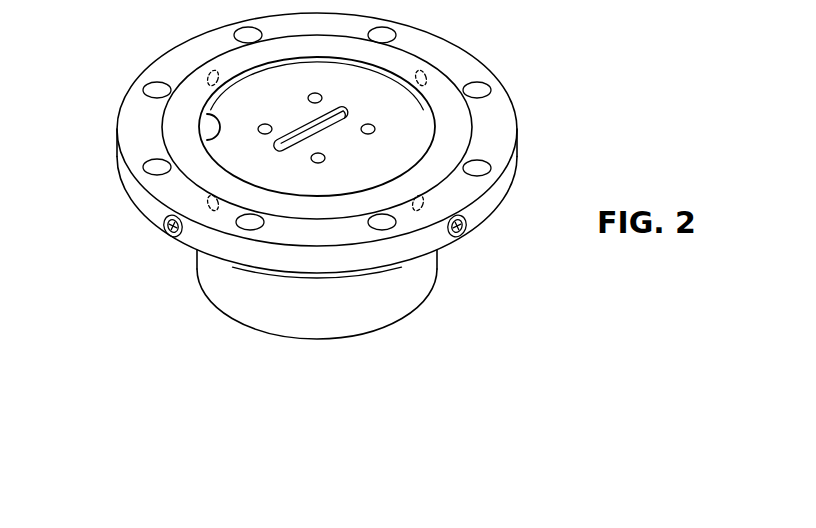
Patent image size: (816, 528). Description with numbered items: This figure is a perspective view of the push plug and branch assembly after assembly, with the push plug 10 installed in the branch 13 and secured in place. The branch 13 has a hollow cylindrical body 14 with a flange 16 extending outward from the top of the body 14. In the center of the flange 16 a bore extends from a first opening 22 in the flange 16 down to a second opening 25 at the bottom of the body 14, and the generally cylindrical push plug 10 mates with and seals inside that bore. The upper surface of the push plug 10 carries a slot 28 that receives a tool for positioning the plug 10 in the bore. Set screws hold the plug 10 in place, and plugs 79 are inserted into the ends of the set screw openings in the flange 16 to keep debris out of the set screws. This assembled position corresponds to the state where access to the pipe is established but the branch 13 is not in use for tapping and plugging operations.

The push plug 10 is at (292, 103).
The branch 13 is at (538, 160).
The hollow cylindrical body 14 is at (240, 297).
The flange 16 is at (433, 52).
The first opening 22 is at (212, 116).
The second opening 25 is at (295, 348).
The slot 28 is at (321, 130).
The plugs 79 is at (164, 229).